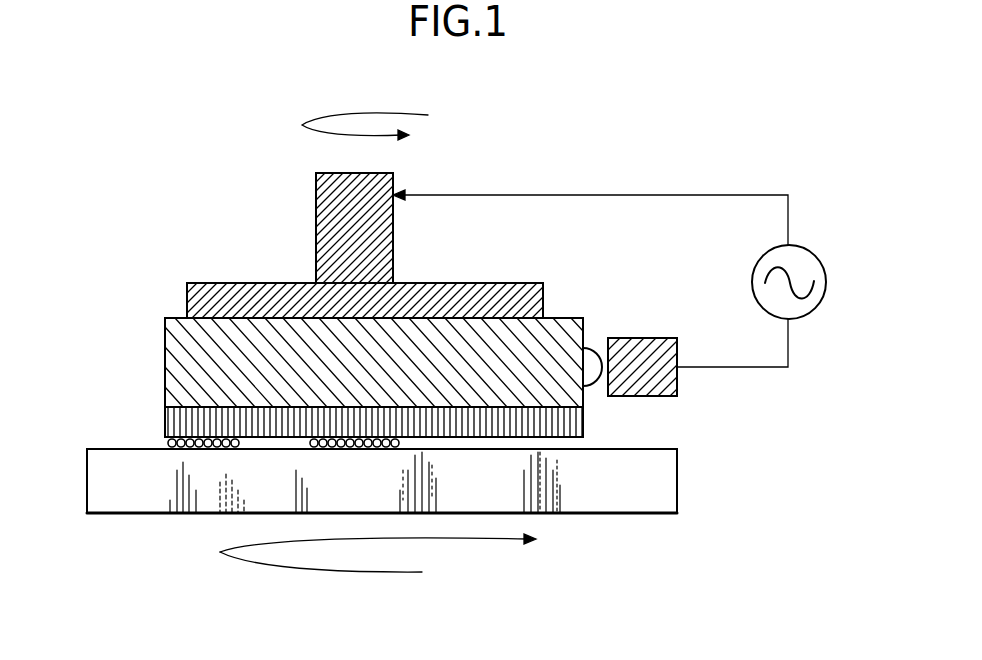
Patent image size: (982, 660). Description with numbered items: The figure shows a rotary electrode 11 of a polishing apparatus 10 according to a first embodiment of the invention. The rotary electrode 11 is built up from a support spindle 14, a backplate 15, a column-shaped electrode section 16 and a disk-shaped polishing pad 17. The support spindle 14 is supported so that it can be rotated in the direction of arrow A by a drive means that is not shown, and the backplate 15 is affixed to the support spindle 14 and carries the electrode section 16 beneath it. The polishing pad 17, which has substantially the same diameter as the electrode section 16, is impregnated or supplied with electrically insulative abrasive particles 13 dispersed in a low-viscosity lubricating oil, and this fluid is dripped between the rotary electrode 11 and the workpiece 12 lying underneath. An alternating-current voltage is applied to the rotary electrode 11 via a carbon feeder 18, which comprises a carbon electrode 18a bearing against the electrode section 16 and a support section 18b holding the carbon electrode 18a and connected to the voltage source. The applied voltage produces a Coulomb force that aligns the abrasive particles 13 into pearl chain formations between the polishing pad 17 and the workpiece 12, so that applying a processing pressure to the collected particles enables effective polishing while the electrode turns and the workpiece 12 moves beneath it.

The polishing apparatus 10 is at (227, 128).
The rotary electrode 11 is at (306, 250).
The workpiece 12 is at (142, 505).
The abrasive particles 13 is at (170, 442).
The support spindle 14 is at (386, 231).
The backplate 15 is at (187, 300).
The electrode section 16 is at (165, 352).
The polishing pad 17 is at (168, 422).
The carbon feeder 18 is at (682, 281).
The carbon electrode 18a is at (597, 349).
The support section 18b is at (660, 339).